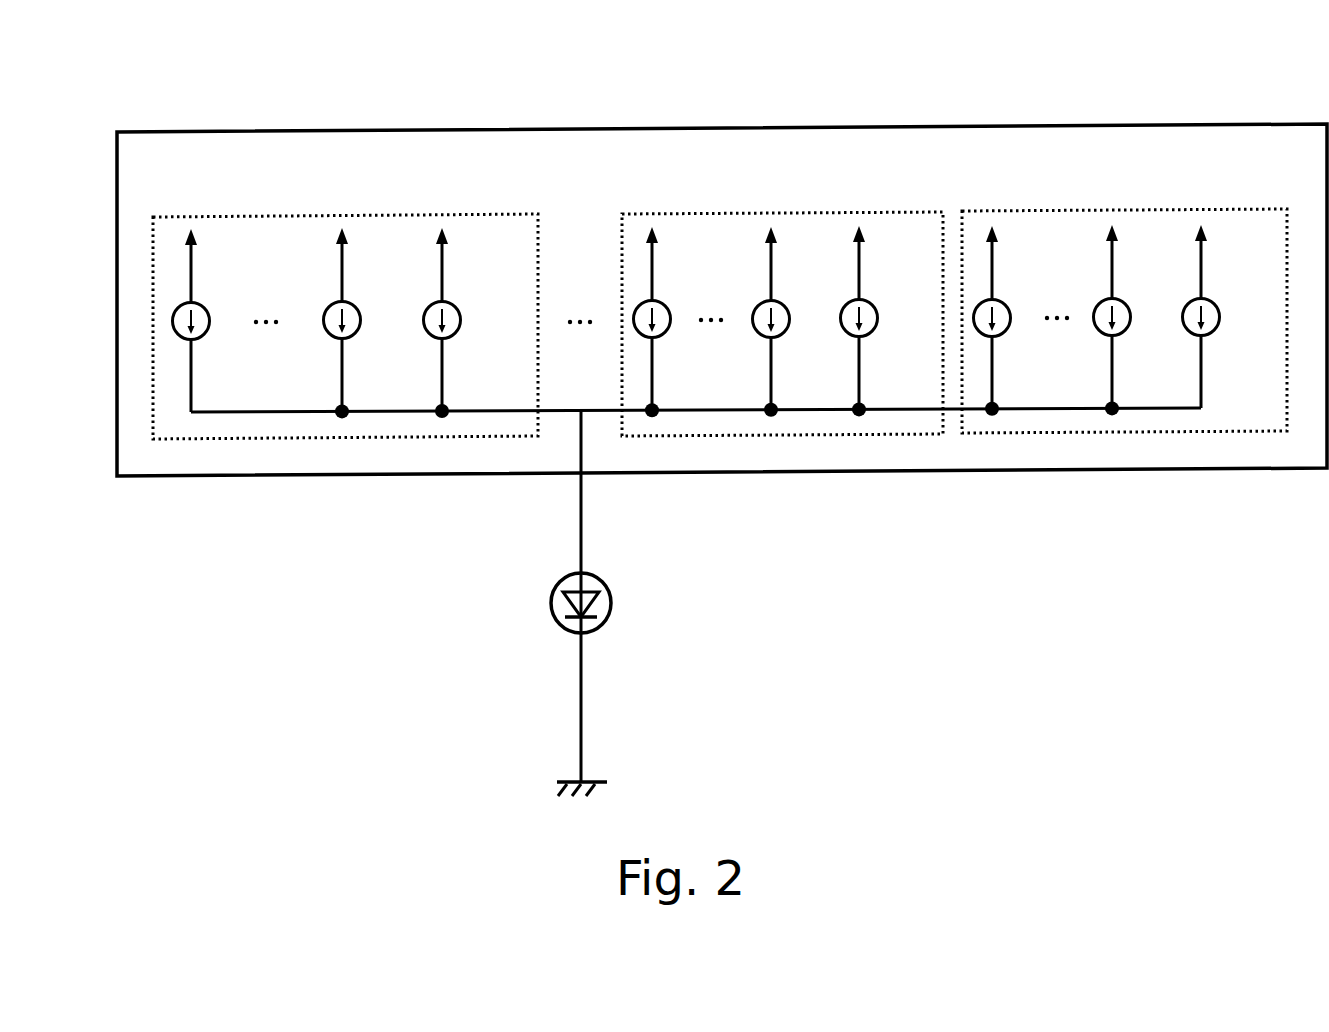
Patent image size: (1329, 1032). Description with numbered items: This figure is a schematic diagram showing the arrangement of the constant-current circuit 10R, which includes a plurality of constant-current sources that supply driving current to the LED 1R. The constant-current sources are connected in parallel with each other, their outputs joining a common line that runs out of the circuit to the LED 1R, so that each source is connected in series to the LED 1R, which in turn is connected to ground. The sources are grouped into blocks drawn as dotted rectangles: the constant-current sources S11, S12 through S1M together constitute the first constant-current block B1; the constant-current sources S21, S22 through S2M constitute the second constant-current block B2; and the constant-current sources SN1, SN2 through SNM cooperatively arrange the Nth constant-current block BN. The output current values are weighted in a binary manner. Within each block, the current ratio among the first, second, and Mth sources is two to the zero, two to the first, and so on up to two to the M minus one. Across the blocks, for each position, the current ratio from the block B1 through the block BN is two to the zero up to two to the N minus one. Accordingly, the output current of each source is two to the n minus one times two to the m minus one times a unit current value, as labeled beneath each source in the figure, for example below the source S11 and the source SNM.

The constant-current circuit 10R is at (177, 131).
The LED 1R is at (611, 602).
The Nth constant-current block BN is at (345, 214).
The 2nd constant-current block B2 is at (782, 212).
The 1st constant-current block B1 is at (1123, 208).
The constant-current source SNM is at (248, 320).
The constant-current source SN2 is at (390, 319).
The constant-current source SN1 is at (490, 319).
The constant-current source S2M is at (701, 318).
The constant-current source S22 is at (811, 318).
The constant-current source S21 is at (899, 317).
The constant-current source S1M is at (1041, 317).
The constant-current source S12 is at (1152, 316).
The constant-current source S11 is at (1241, 316).